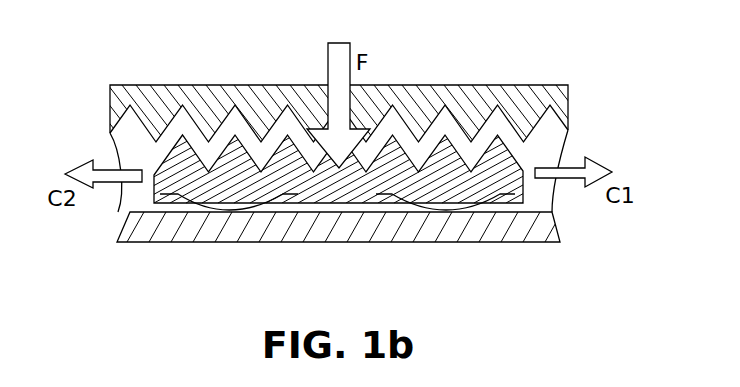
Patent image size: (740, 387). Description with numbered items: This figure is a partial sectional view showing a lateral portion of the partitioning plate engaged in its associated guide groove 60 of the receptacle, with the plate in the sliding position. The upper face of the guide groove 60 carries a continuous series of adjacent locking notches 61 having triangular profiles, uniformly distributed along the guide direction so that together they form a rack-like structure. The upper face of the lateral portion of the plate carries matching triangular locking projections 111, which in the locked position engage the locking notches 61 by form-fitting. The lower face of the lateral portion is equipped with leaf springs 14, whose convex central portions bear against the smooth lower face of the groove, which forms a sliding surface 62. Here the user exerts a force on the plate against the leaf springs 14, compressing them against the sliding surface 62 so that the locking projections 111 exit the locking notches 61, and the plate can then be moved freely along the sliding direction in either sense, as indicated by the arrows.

The guide groove 60 is at (560, 148).
The locking notches 61 is at (282, 125).
The sliding surface 62 is at (553, 203).
The leaf springs 14 is at (263, 208).
The locking projections 111 is at (287, 162).